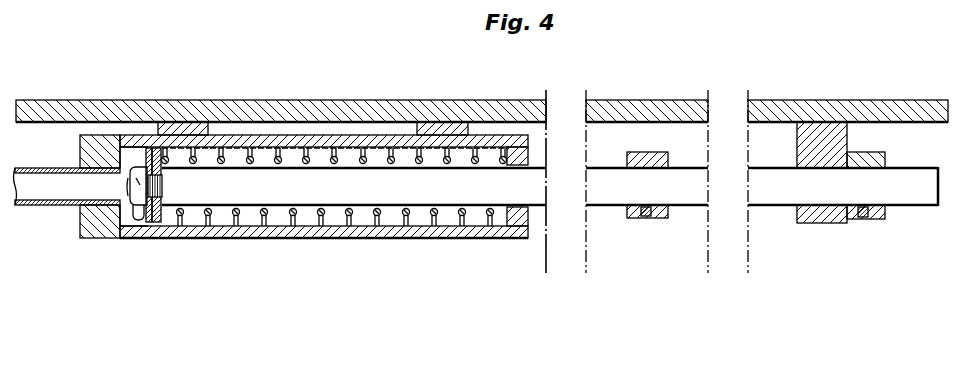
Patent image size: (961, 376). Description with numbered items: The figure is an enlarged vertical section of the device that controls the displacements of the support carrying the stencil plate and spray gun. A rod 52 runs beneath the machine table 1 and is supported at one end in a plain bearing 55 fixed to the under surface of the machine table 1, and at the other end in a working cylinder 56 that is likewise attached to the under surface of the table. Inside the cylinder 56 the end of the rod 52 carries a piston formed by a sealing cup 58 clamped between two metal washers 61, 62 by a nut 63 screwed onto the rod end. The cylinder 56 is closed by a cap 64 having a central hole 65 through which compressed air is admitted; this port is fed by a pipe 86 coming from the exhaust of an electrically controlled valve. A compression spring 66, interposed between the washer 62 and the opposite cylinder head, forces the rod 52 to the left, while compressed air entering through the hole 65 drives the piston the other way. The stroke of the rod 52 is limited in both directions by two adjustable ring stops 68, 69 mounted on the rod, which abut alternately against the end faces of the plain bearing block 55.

The machine table 1 is at (345, 100).
The rod 52 is at (541, 196).
The plain bearing 55 is at (820, 224).
The working cylinder 56 is at (353, 238).
The sealing cup 58 is at (154, 223).
The metal washer 61 is at (150, 223).
The metal washer 62 is at (161, 222).
The nut 63 is at (137, 206).
The cap 64 is at (80, 218).
The central hole 65 is at (67, 190).
The compression spring 66 is at (263, 216).
The adjustable ring stop 68 is at (634, 219).
The adjustable ring stop 69 is at (878, 220).
The pipe 86 is at (57, 206).